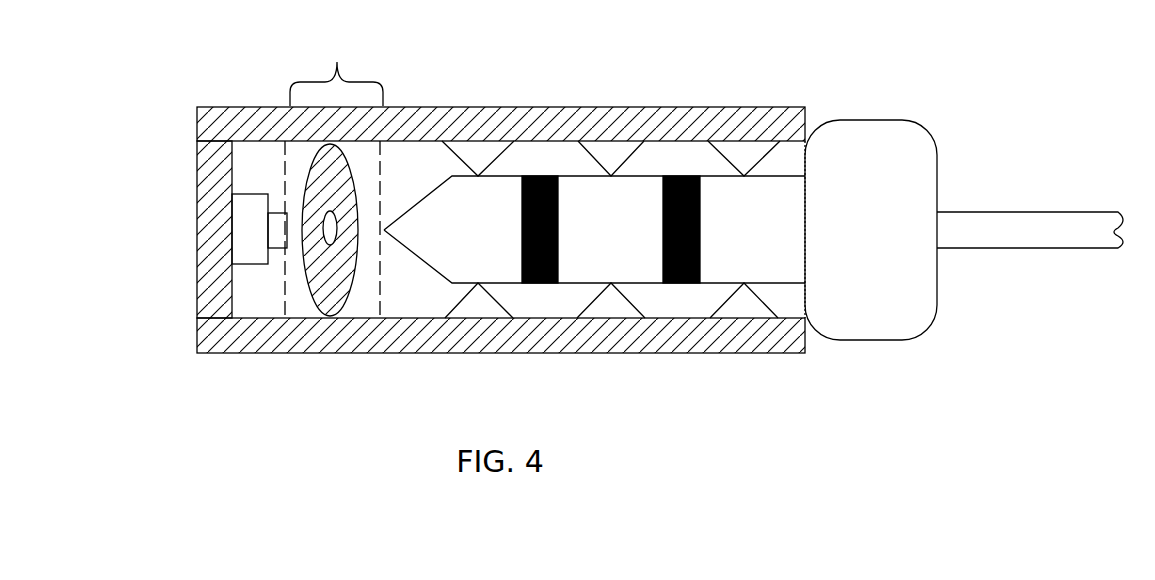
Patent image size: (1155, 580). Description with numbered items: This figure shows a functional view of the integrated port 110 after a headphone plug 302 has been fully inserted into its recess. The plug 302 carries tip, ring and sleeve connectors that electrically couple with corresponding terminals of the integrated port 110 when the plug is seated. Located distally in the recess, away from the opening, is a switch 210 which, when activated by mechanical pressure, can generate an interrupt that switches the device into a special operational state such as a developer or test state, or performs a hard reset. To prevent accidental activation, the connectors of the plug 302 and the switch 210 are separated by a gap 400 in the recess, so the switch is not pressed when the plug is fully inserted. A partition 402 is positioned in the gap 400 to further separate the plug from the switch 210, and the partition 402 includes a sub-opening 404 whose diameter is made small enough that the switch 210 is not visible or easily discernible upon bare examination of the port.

The gap 400 is at (337, 62).
The integrated port 110 is at (197, 234).
The switch 210 is at (258, 264).
The partition 402 is at (310, 297).
The sub-opening 404 is at (331, 240).
The headphone plug 302 is at (935, 159).